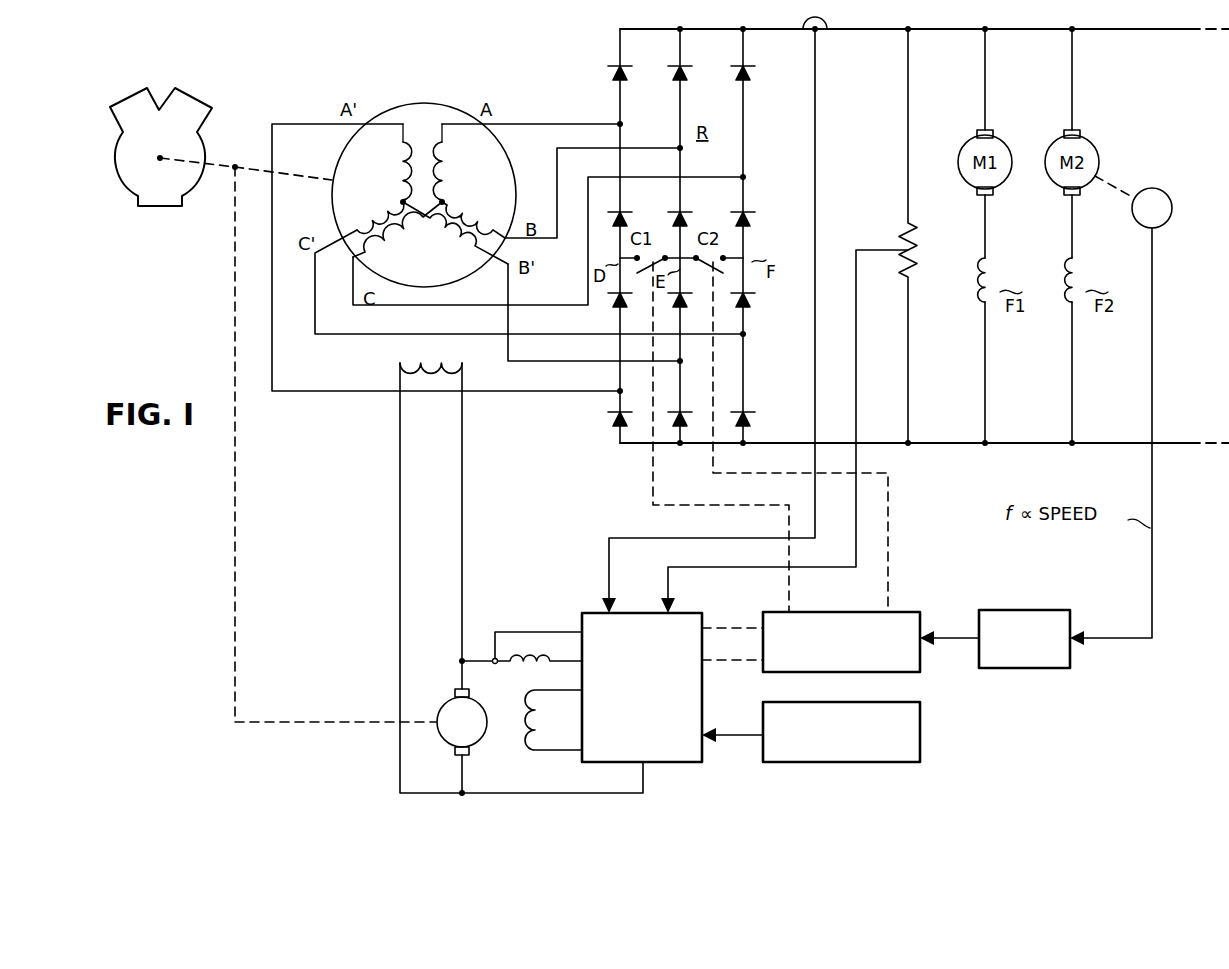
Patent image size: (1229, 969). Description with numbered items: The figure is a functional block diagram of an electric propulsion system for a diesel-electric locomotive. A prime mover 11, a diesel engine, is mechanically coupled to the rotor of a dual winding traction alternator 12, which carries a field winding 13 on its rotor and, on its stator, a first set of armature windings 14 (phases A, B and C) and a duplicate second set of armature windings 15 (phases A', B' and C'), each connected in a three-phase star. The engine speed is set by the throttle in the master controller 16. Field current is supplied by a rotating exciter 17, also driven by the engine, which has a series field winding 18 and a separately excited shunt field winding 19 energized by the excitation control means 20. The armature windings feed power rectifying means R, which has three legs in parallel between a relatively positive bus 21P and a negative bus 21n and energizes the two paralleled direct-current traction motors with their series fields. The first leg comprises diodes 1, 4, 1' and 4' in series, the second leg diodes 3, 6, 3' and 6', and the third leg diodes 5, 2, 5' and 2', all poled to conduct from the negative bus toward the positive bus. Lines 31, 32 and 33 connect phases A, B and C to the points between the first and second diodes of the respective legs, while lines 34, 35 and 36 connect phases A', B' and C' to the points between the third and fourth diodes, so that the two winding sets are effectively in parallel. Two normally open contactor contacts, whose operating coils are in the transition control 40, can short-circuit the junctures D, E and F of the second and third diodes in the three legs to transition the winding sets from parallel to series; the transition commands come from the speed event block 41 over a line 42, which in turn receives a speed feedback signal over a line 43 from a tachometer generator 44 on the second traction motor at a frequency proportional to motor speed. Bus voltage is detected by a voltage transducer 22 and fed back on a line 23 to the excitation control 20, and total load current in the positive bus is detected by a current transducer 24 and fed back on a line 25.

The prime mover 11 is at (100, 153).
The alternator 12 is at (424, 103).
The field winding 13 is at (396, 356).
The first set of armature windings 14 is at (488, 187).
The second set of armature windings 15 is at (378, 187).
The master controller 16 is at (923, 742).
The rotating exciter 17 is at (450, 693).
The series field winding 18 is at (526, 680).
The shunt field winding 19 is at (524, 744).
The excitation control means 20 is at (580, 612).
The positive direct current power bus 21P is at (958, 32).
The negative direct current power bus 21n is at (974, 446).
The voltage transducer 22 is at (896, 226).
The voltage feedback line 23 is at (858, 366).
The current transducer 24 is at (822, 36).
The current feedback line 25 is at (818, 138).
The line 31 is at (558, 123).
The line 32 is at (548, 167).
The line 33 is at (584, 228).
The line 34 is at (561, 396).
The line 35 is at (564, 364).
The line 36 is at (567, 335).
The transition control 40 is at (918, 612).
The speed event means 41 is at (1062, 610).
The line 42 is at (964, 642).
The line 43 is at (1158, 300).
The tachometer generator 44 is at (1163, 190).
The first diode 1 is at (629, 82).
The second diode 2 is at (752, 203).
The first diode 3 is at (689, 82).
The second diode 4 is at (629, 204).
The first diode 5 is at (753, 82).
The second diode 6 is at (690, 203).
The third diode 1' is at (629, 311).
The fourth diode 2' is at (752, 400).
The third diode 3' is at (689, 311).
The fourth diode 4' is at (607, 432).
The third diode 5' is at (752, 311).
The fourth diode 6' is at (673, 405).